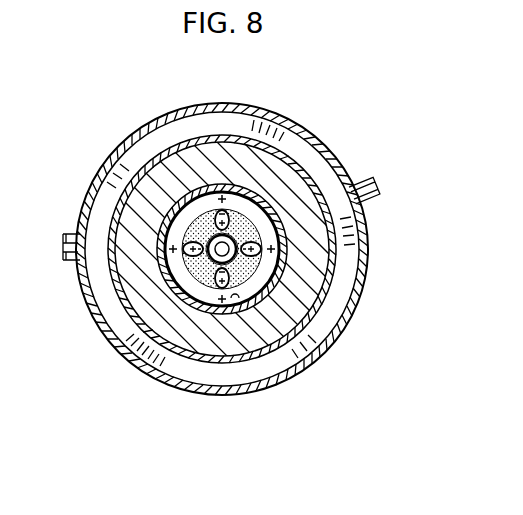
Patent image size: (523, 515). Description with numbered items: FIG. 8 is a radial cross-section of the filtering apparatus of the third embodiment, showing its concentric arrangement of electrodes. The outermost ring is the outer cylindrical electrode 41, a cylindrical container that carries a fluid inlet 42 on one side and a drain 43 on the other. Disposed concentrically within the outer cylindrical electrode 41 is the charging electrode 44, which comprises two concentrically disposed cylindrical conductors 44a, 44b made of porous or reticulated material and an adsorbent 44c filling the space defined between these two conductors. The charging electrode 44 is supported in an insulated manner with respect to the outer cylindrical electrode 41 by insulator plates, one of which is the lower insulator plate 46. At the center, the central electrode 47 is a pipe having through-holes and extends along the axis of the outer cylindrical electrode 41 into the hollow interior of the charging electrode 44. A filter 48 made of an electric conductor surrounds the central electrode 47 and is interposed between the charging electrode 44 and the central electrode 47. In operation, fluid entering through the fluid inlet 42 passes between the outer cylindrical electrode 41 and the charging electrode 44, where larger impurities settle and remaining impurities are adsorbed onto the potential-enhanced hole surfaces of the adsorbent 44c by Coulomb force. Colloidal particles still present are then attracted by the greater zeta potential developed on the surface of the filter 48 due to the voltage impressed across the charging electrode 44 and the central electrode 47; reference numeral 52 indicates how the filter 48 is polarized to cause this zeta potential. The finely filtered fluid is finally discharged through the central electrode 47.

The outer cylindrical electrode 41 is at (248, 104).
The fluid inlet 42 is at (62, 247).
The drain 43 is at (355, 178).
The charging electrode 44 is at (228, 249).
The cylindrical conductor 44a is at (178, 350).
The cylindrical conductor 44b is at (247, 312).
The adsorbent 44c is at (277, 322).
The lower insulator plate 46 is at (345, 260).
The central electrode 47 is at (238, 300).
The filter 48 is at (191, 197).
The polarization of the filter 52 is at (273, 237).